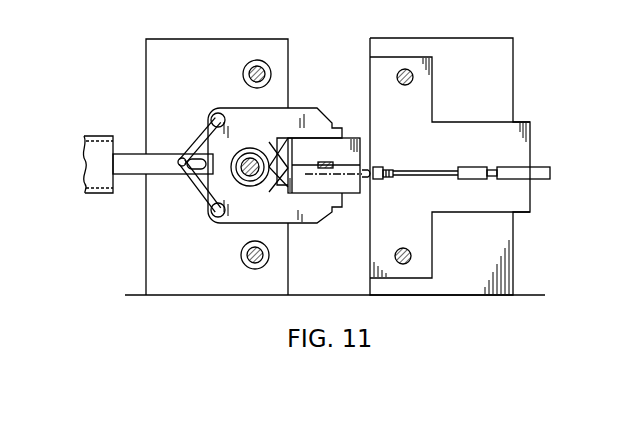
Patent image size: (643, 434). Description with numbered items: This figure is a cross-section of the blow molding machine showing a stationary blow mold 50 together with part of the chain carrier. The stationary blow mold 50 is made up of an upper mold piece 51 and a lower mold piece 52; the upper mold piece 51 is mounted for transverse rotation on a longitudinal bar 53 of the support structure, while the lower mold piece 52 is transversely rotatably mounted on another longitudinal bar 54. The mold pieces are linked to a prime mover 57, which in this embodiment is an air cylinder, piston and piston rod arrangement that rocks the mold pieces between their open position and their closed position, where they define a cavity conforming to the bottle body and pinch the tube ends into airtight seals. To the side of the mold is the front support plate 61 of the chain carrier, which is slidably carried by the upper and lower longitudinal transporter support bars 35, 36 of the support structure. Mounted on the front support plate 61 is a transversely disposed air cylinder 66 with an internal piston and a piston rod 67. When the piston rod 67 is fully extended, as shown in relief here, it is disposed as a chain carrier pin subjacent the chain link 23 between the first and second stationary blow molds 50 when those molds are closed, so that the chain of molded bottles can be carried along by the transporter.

The chain link 23 is at (325, 160).
The upper longitudinal bar 35 is at (398, 72).
The lower longitudinal bar 36 is at (403, 265).
The stationary blow mold 50 is at (347, 126).
The upper mold piece 51 is at (352, 162).
The lower mold piece 52 is at (340, 190).
The longitudinal bar 53 is at (266, 68).
The longitudinal bar 54 is at (251, 269).
The prime mover 57 is at (100, 150).
The front support plate 61 is at (523, 196).
The transversely disposed air cylinder 66 is at (538, 172).
The piston rod 67 is at (408, 175).